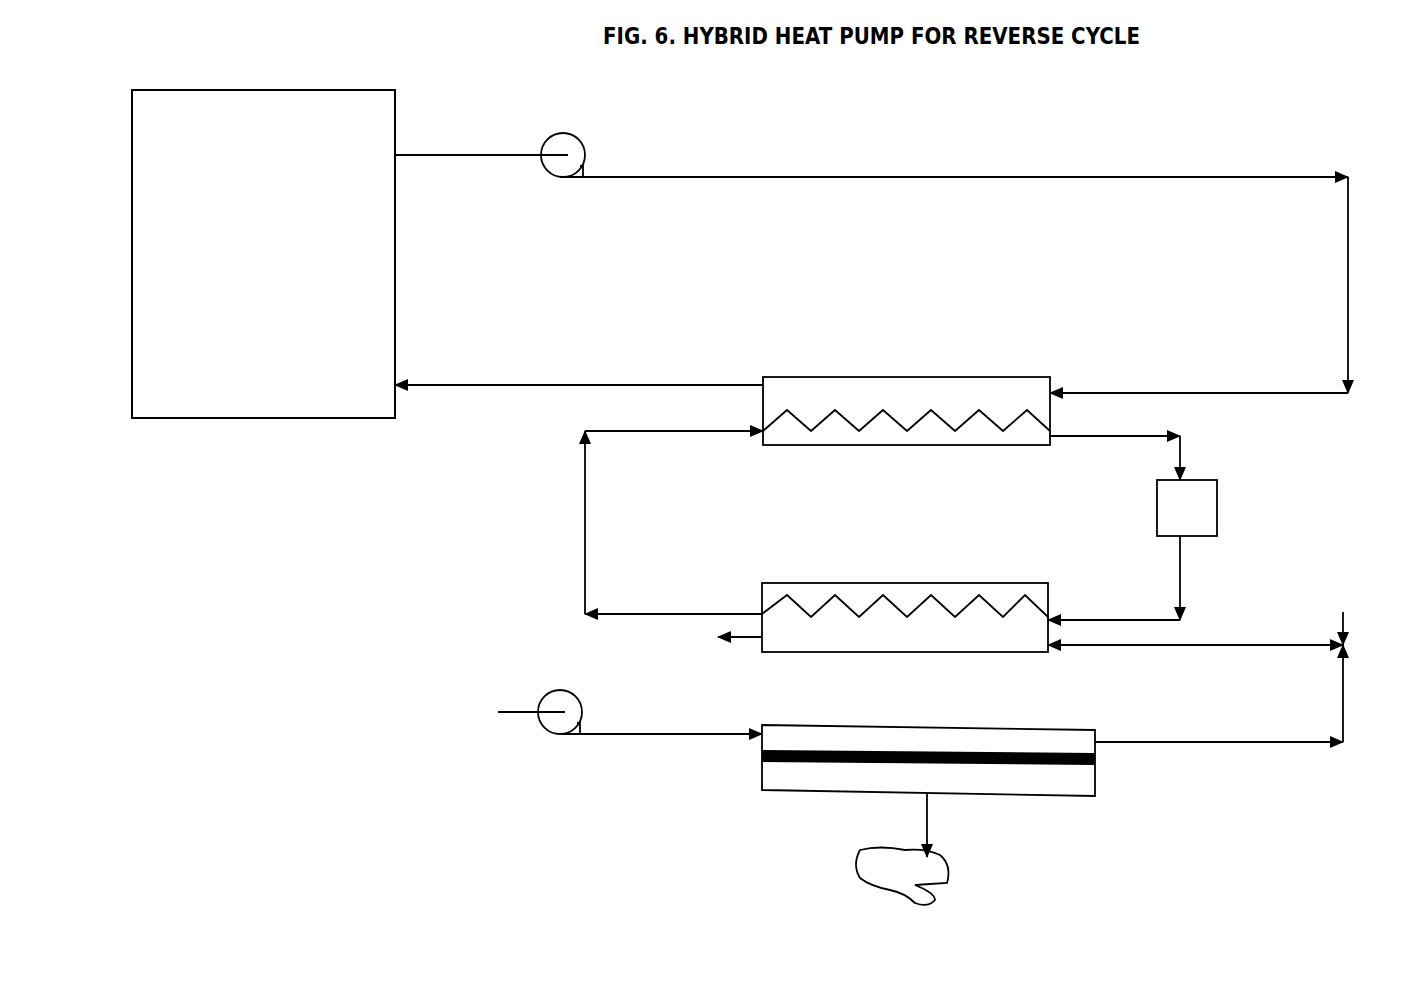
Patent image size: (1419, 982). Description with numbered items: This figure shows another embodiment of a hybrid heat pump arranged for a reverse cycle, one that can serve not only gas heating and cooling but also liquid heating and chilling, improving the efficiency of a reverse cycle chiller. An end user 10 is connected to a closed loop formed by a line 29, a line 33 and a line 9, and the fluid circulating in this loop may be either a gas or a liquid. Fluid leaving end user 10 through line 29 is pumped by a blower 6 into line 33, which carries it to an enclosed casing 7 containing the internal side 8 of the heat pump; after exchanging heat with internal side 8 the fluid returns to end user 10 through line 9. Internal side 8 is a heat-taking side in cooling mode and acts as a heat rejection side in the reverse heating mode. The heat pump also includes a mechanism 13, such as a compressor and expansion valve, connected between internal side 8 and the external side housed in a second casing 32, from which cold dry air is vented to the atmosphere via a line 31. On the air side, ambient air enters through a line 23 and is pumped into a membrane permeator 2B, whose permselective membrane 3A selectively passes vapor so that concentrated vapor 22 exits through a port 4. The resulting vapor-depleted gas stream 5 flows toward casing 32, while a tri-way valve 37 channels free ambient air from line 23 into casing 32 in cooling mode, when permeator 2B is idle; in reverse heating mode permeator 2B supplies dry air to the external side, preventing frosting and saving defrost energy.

The end user 10 is at (263, 254).
The line 29 is at (478, 155).
The blower 6 is at (548, 143).
The line 33 is at (690, 177).
The line 9 is at (648, 385).
The casing 7 is at (895, 486).
The internal side 8 is at (858, 430).
The mechanism 13 is at (1157, 525).
The casing 32 is at (808, 583).
The line 31 is at (716, 637).
The tri-way valve 37 is at (1355, 645).
The vapor-depleted gas stream 5 is at (1210, 742).
The line 23 is at (498, 712).
The membrane permeator 2B is at (928, 735).
The permselective membrane 3A is at (890, 752).
The port 4 is at (950, 815).
The concentrated vapor 22 is at (902, 876).